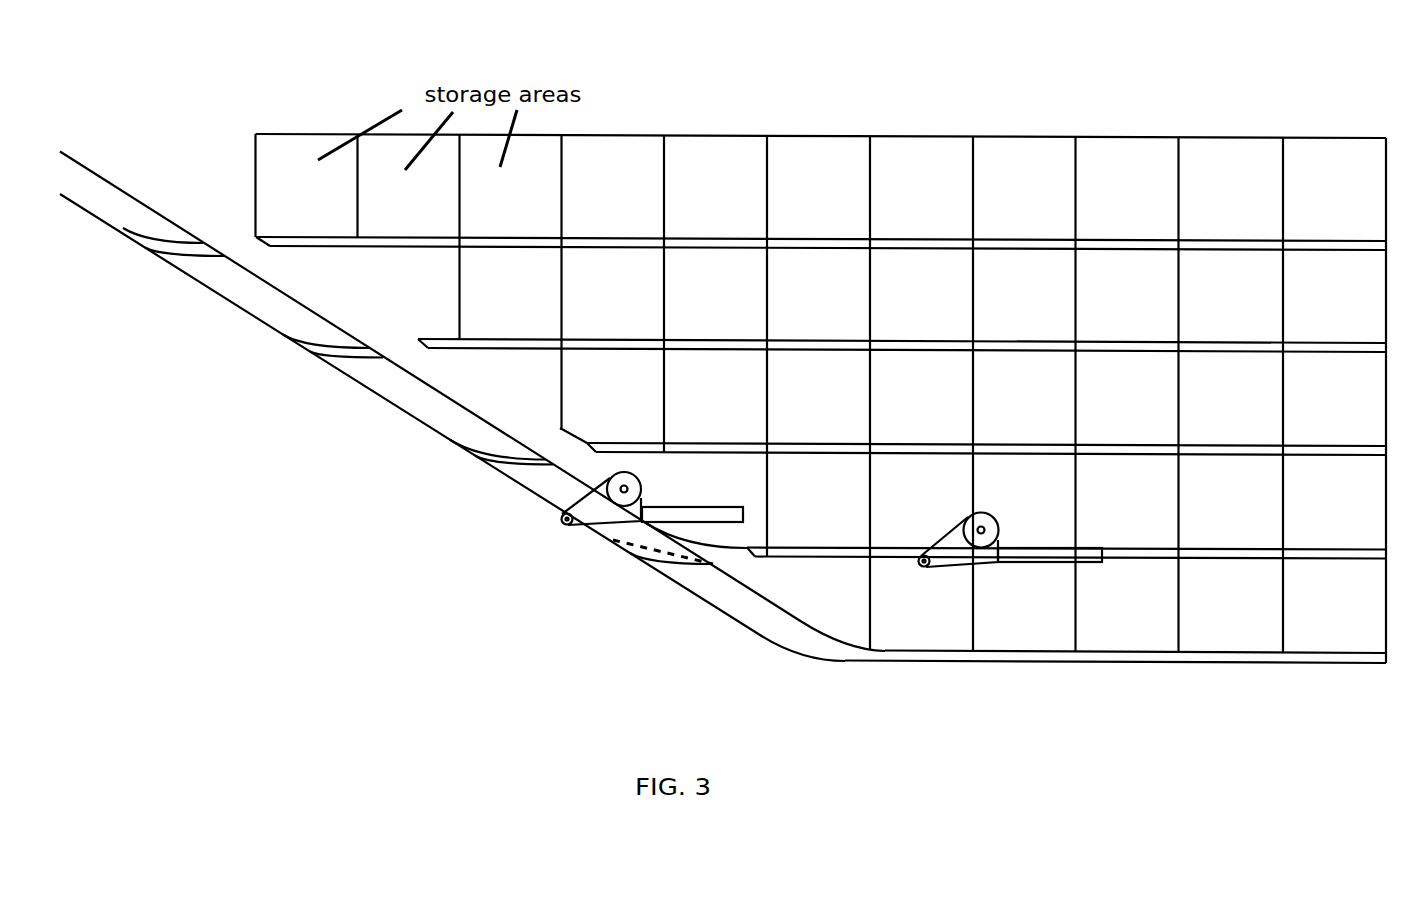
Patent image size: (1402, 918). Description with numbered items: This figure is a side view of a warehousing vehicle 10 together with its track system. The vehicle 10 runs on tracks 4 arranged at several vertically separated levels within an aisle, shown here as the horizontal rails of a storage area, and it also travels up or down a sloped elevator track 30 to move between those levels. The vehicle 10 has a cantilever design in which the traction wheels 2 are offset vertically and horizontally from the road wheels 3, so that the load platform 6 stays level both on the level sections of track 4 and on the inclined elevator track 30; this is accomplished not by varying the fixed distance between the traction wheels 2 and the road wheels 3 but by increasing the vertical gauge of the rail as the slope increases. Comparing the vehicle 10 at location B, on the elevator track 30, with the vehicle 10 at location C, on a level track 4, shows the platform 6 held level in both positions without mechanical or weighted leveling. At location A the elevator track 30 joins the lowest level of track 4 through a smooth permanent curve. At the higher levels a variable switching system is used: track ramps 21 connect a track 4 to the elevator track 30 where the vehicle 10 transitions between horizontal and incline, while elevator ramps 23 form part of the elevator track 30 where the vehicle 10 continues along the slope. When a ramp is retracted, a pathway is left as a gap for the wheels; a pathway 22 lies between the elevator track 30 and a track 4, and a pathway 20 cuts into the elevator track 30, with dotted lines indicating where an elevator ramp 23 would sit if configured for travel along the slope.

The elevator track 30 is at (77, 157).
The track 4 is at (583, 237).
The pathway 22 is at (230, 225).
The elevator ramp 23 is at (142, 252).
The track ramp 21 is at (733, 555).
The pathway 20 is at (622, 560).
The vehicle 10 is at (586, 517).
The traction wheels 2 is at (625, 470).
The road wheels 3 is at (558, 528).
The load platform 6 is at (708, 508).
The location A is at (730, 632).
The location B is at (503, 527).
The location C is at (1113, 513).